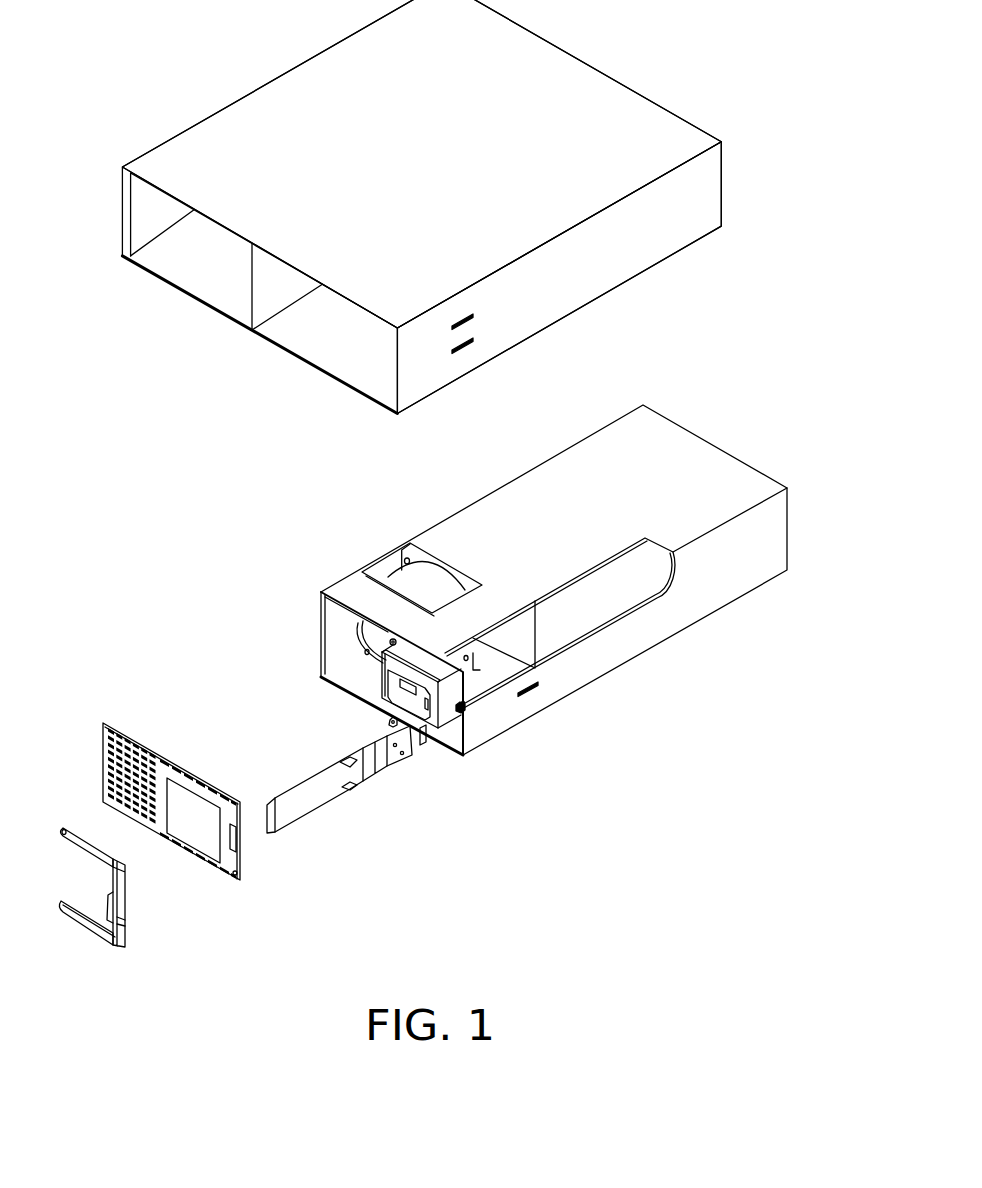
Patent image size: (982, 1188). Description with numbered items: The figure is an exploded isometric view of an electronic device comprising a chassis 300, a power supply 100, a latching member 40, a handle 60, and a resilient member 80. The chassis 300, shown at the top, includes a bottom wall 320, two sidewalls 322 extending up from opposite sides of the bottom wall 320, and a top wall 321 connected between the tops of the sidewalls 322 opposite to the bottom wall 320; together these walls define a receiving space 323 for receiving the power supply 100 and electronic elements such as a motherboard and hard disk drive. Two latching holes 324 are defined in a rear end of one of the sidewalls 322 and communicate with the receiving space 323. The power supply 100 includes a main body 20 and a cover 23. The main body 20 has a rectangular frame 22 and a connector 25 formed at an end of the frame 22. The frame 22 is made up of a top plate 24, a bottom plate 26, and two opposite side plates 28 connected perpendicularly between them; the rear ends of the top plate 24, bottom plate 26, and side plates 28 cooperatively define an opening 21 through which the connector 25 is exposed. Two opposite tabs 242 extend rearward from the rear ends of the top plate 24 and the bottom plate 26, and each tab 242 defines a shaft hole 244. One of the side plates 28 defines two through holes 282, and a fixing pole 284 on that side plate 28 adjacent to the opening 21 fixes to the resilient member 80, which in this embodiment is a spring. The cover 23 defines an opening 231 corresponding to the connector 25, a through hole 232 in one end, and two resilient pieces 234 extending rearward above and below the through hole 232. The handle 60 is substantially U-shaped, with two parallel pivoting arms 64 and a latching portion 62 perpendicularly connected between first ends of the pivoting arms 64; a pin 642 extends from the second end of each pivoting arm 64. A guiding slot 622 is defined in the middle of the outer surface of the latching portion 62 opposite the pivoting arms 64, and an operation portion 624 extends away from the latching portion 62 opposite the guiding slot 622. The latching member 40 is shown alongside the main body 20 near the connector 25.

The chassis 300 is at (461, 223).
The bottom wall 320 is at (445, 223).
The top wall 321 is at (257, 138).
The sidewalls 322 is at (582, 278).
The receiving space 323 is at (316, 340).
The latching holes 324 is at (473, 340).
The power supply 100 is at (419, 713).
The main body 20 is at (511, 610).
The opening 21 is at (333, 629).
The frame 22 is at (713, 470).
The top plate 24 is at (348, 602).
The bottom plate 26 is at (339, 723).
The side plates 28 is at (632, 640).
The through holes 282 is at (533, 693).
The fixing pole 284 is at (465, 708).
The resilient member 80 is at (461, 712).
The connector 25 is at (423, 737).
The tabs 242 is at (390, 720).
The shaft hole 244 is at (390, 724).
The cover 23 is at (177, 818).
The opening 231 is at (198, 810).
The through hole 232 is at (237, 838).
The resilient pieces 234 is at (238, 880).
The latching member 40 is at (315, 797).
The handle 60 is at (129, 902).
The latching portion 62 is at (125, 933).
The guiding slot 622 is at (129, 903).
The operation portion 624 is at (107, 900).
The pivoting arms 64 is at (105, 828).
The pin 642 is at (63, 827).